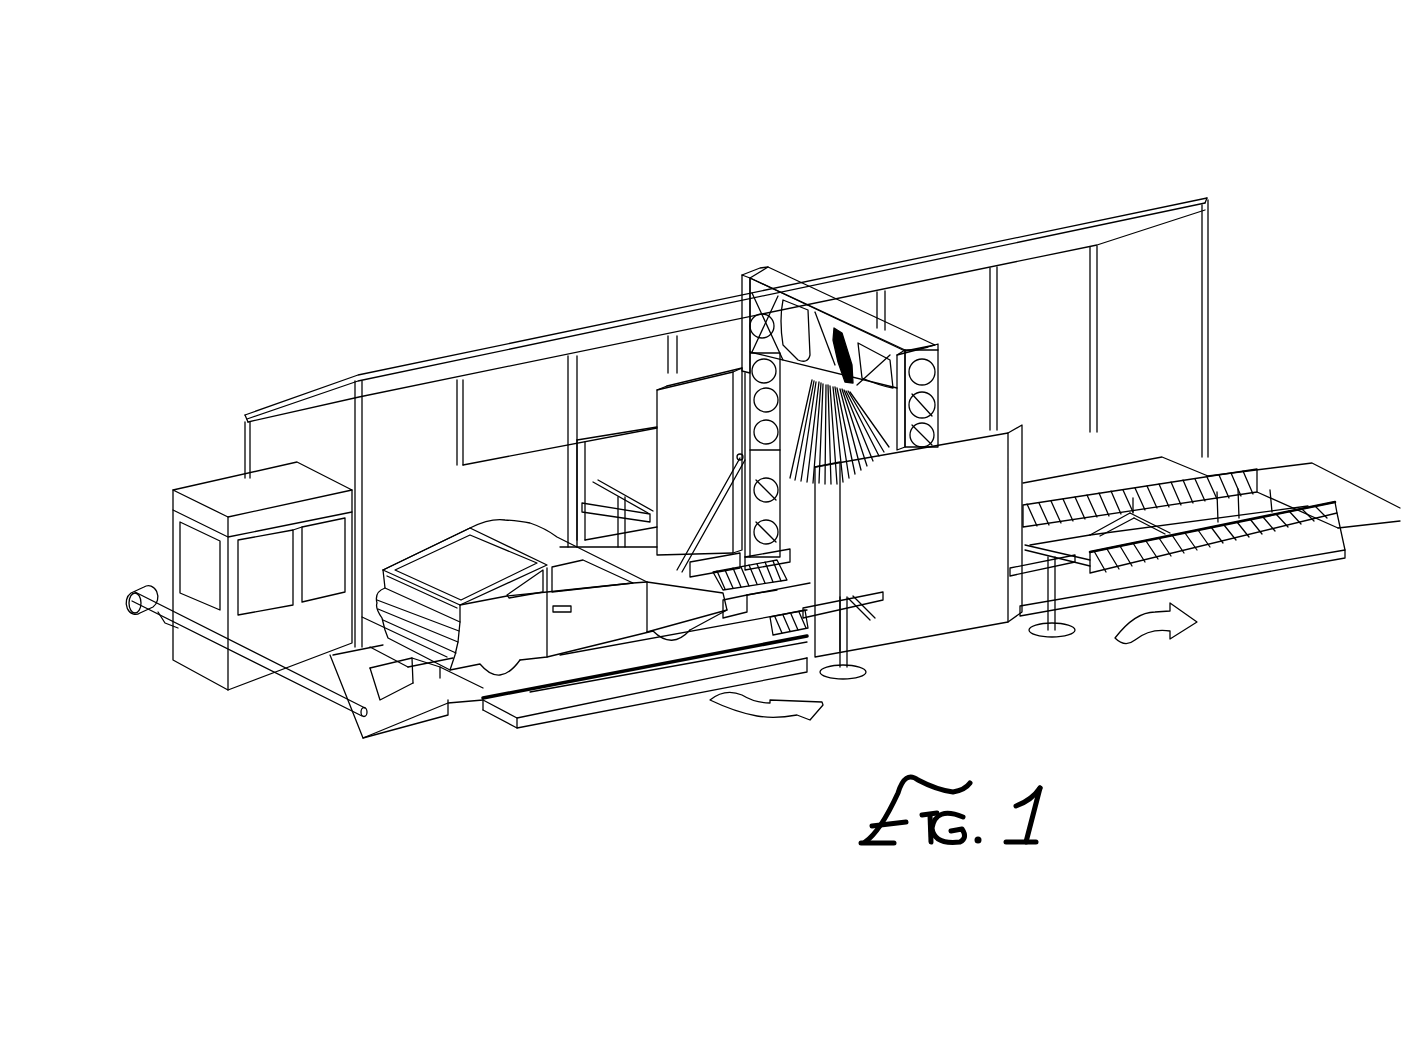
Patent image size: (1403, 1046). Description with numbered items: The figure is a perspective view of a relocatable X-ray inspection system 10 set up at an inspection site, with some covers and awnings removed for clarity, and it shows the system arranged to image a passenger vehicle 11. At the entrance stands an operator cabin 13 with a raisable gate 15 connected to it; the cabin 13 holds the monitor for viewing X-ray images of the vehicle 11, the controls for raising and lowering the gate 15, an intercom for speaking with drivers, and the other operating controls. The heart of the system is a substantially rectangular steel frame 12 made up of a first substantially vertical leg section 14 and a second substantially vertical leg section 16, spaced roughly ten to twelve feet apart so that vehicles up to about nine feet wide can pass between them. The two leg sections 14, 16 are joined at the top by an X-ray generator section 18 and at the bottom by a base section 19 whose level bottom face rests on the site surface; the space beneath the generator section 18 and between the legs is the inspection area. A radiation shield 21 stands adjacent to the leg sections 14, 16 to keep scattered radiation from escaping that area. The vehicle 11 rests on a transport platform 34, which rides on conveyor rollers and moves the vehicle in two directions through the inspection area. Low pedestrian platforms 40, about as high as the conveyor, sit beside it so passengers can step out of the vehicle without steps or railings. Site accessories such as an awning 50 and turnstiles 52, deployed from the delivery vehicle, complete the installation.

The relocatable X-ray inspection system 10 is at (600, 256).
The vehicle 11 is at (486, 650).
The frame 12 is at (750, 262).
The operator cabin 13 is at (216, 487).
The first substantially vertical leg section 14 is at (743, 368).
The raisable gate 15 is at (320, 690).
The second substantially vertical leg section 16 is at (936, 387).
The X-ray generator section 18 is at (843, 315).
The base section 19 is at (777, 592).
The radiation shield 21 is at (935, 590).
The transport platform 34 is at (548, 676).
The pedestrian platform 40 is at (622, 680).
The awning 50 is at (305, 397).
The turnstile 52 is at (1077, 573).